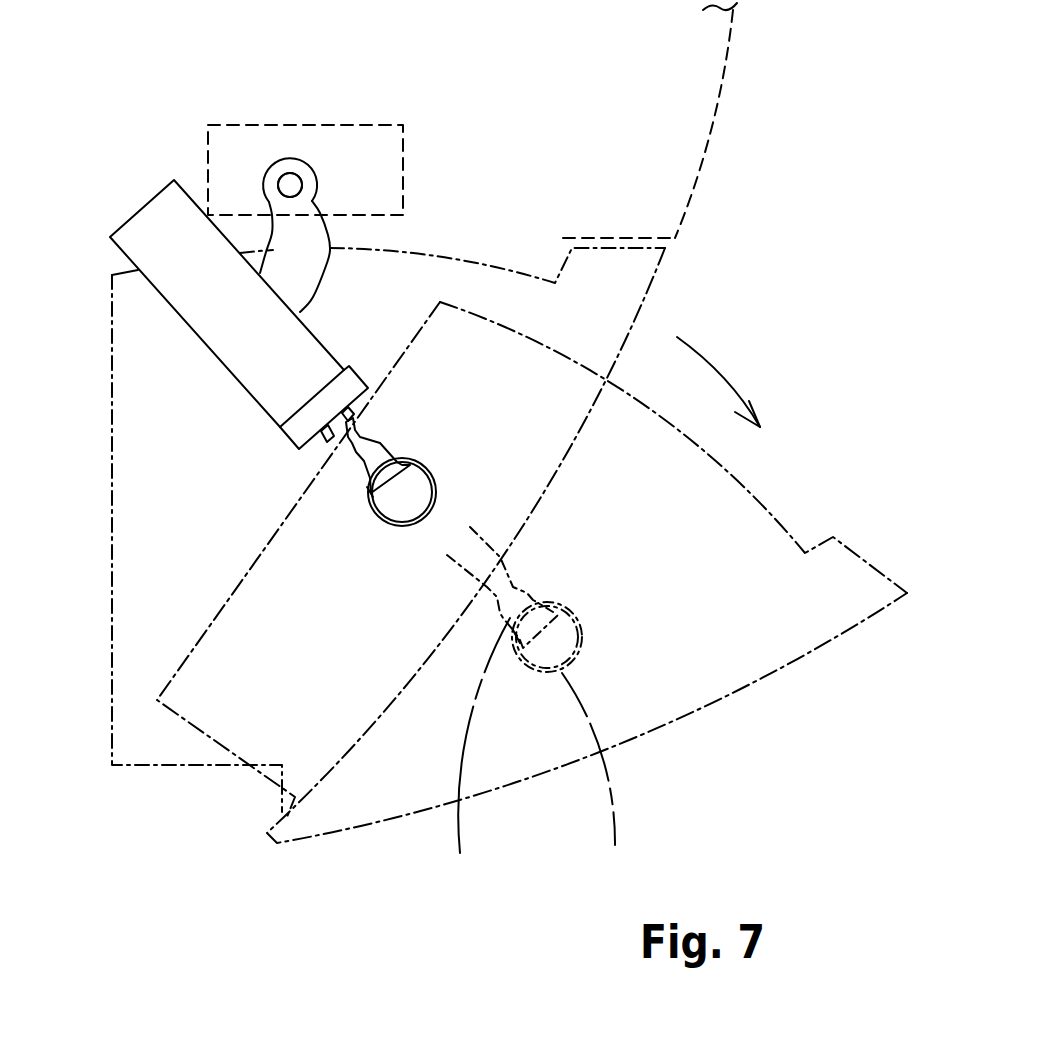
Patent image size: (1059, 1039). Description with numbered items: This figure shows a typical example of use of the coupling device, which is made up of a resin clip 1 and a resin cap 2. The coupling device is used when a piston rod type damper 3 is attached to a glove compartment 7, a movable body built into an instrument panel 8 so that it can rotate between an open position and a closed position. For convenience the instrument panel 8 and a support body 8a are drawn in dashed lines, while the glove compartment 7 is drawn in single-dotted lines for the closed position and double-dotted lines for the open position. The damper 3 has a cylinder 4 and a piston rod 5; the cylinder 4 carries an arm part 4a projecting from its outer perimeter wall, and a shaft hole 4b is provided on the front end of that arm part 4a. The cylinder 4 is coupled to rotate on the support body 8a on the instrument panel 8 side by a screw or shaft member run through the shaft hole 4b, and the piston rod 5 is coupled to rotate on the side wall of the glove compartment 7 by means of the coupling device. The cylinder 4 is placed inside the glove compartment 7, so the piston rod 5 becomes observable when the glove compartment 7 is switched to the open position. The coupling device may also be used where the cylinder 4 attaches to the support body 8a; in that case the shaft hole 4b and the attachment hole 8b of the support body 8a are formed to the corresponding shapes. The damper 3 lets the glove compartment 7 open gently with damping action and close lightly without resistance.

The clip 1 is at (372, 510).
The cap 2 is at (390, 507).
The damper 3 is at (64, 460).
The cylinder 4 is at (233, 358).
The arm part 4a is at (316, 268).
The shaft hole 4b is at (292, 183).
The piston rod 5 is at (345, 433).
The glove compartment 7 is at (655, 278).
The instrument panel 8 is at (707, 148).
The support body 8a is at (378, 128).
The attachment hole 8b is at (290, 185).